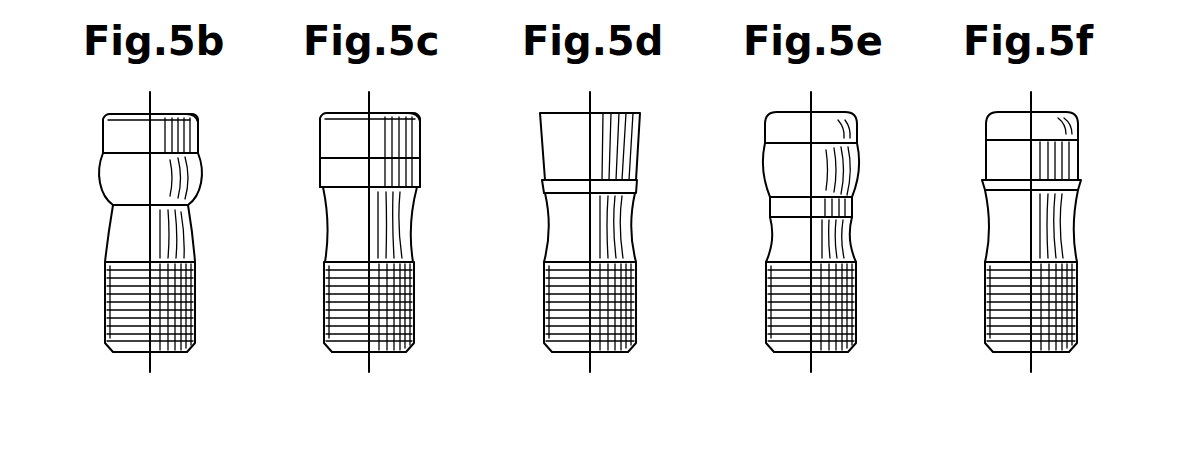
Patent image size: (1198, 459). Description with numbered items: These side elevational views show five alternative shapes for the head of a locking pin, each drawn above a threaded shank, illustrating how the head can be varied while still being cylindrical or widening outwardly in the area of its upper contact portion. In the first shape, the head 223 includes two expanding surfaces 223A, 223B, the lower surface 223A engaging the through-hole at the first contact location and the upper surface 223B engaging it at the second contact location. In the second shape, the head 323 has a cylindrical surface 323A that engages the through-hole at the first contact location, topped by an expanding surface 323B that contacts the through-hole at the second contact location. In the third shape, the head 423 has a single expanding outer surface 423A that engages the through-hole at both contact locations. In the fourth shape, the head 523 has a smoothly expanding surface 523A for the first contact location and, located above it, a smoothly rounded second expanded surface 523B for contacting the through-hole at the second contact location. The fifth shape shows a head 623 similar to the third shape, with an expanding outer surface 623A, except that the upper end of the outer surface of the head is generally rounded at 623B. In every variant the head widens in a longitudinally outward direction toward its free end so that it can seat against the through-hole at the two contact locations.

In FIG. 5B, the head 223 is at (117, 140).
In FIG. 5B, the expanding surface 223A is at (100, 176).
In FIG. 5B, the expanding surface 223B is at (200, 128).
In FIG. 5C, the head 323 is at (338, 143).
In FIG. 5C, the cylindrical surface 323A is at (322, 169).
In FIG. 5C, the expanding surface 323B is at (422, 132).
In FIG. 5D, the head 423 is at (558, 152).
In FIG. 5D, the expanding outer surface 423A is at (640, 133).
In FIG. 5E, the head 523 is at (778, 165).
In FIG. 5E, the smoothly expanding surface 523A is at (762, 187).
In FIG. 5E, the smoothly rounded second expanded surface 523B is at (857, 130).
In FIG. 5F, the head 623 is at (1005, 158).
In FIG. 5F, the expanding outer surface 623A is at (1078, 158).
In FIG. 5F, the rounded upper end 623B is at (1076, 127).